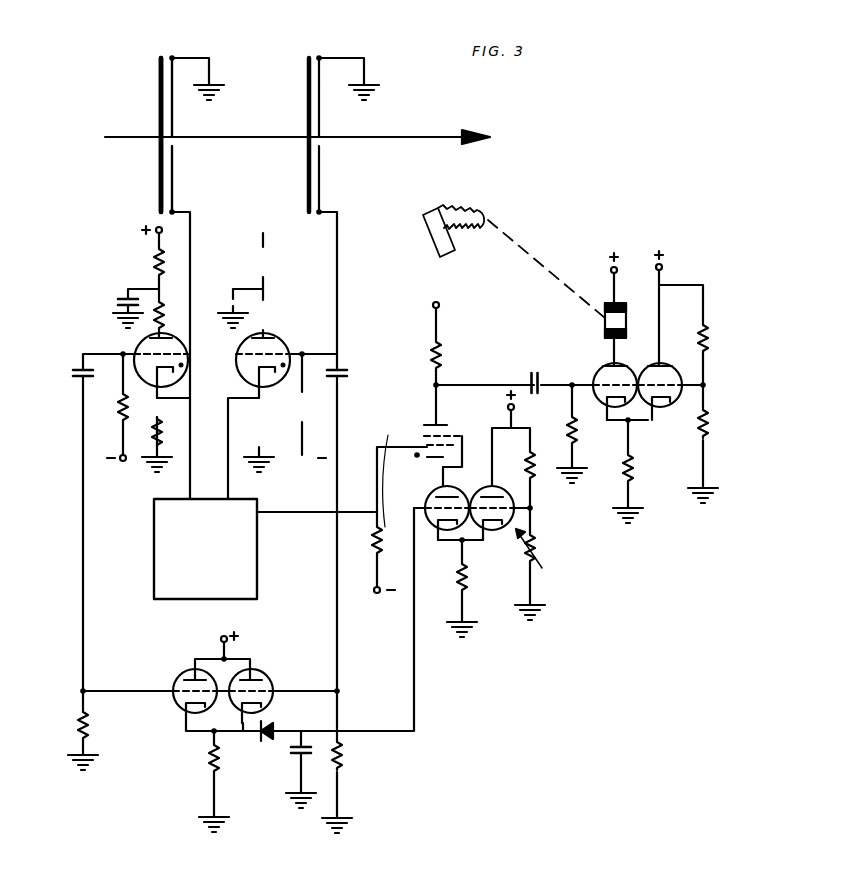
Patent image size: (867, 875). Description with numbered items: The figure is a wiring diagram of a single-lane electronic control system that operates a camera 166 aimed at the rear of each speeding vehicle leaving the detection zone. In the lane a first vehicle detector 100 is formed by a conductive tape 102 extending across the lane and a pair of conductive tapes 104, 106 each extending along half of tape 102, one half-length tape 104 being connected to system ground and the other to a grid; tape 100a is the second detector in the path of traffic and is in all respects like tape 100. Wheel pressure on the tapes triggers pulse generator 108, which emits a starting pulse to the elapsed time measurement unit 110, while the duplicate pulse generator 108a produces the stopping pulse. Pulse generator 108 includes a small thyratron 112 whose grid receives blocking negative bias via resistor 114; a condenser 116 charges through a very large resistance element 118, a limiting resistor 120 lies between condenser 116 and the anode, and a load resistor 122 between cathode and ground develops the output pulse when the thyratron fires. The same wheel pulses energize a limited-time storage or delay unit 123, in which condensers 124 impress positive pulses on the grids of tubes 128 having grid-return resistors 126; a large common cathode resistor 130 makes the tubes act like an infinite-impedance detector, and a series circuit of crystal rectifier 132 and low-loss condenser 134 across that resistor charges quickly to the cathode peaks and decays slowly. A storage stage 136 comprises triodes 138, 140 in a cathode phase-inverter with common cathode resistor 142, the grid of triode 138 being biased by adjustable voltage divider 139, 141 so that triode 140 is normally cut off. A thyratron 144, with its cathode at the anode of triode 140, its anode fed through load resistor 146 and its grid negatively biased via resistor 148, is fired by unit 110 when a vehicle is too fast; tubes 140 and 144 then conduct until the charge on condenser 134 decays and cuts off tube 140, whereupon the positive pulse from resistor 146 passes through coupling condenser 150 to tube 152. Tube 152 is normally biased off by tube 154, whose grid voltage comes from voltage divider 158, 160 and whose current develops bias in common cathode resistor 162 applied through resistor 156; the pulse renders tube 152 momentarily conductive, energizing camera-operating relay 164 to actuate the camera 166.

The first vehicle detector 100 is at (153, 103).
The second vehicle detector tape 100a is at (302, 126).
The conductive tape 102 is at (160, 173).
The half-length conductive tape 104 is at (173, 122).
The half-length conductive tape 106 is at (173, 190).
The pulse generator 108 is at (132, 342).
The pulse generator 108a is at (273, 327).
The elapsed time measurement unit 110 is at (154, 535).
The thyratron 112 is at (177, 348).
The resistor 114 is at (120, 407).
The condenser 116 is at (117, 298).
The very large resistance element 118 is at (155, 250).
The limiting resistor 120 is at (161, 305).
The load resistor 122 is at (160, 437).
The limited-time storage or delay unit 123 is at (173, 748).
The condensers 124 is at (78, 372).
The grid-return resistors 126 is at (88, 728).
The tubes 128 is at (178, 683).
The common cathode resistor 130 is at (212, 765).
The crystal rectifier 132 is at (266, 735).
The low-loss condenser 134 is at (296, 750).
The storage stage 136 is at (381, 485).
The triode 138 is at (509, 530).
The adjustable voltage divider element 139 is at (533, 475).
The triode 140 is at (431, 495).
The adjustable voltage divider element 141 is at (536, 542).
The common cathode resistor 142 is at (459, 576).
The thyratron 144 is at (420, 428).
The load resistor 146 is at (440, 352).
The resistor 148 is at (372, 535).
The coupling condenser 150 is at (548, 355).
The tube 152 is at (622, 375).
The tube 154 is at (657, 370).
The resistor 156 is at (576, 432).
The voltage divider element 158 is at (708, 342).
The voltage divider element 160 is at (707, 430).
The common cathode resistor 162 is at (634, 470).
The camera-operating relay 164 is at (604, 320).
The camera 166 is at (448, 255).